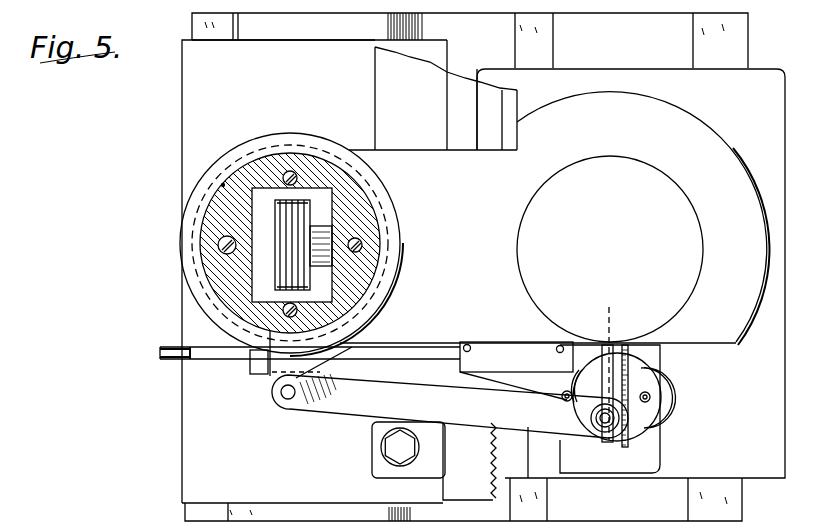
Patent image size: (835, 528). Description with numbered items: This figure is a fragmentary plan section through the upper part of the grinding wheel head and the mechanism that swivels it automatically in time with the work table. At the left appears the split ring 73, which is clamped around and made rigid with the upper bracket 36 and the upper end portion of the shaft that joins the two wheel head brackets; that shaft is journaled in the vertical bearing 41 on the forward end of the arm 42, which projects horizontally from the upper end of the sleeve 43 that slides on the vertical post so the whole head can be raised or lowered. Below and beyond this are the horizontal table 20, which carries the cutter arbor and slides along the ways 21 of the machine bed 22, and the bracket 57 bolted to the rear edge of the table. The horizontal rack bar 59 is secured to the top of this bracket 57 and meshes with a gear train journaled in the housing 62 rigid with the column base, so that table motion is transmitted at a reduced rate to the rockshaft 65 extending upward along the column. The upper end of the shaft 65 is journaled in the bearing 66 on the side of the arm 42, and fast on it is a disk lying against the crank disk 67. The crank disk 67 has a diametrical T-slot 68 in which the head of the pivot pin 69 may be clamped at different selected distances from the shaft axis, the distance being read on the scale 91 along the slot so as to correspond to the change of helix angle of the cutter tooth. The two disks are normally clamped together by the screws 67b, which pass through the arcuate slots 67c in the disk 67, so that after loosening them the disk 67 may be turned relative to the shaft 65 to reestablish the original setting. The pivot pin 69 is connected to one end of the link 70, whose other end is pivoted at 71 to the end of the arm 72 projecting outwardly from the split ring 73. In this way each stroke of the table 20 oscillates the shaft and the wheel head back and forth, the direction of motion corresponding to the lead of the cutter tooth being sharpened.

The horizontal table 20 is at (185, 440).
The ways 21 is at (390, 33).
The machine bed 22 is at (284, 512).
The upper bracket 36 is at (371, 222).
The vertical bearing 41 is at (223, 184).
The arm 42 is at (423, 162).
The sleeve 43 is at (605, 168).
The bracket 57 is at (375, 461).
The horizontal rack bar 59 is at (503, 446).
The housing 62 is at (660, 360).
The shaft 65 is at (624, 369).
The bearing 66 is at (542, 385).
The crank disk 67 is at (640, 430).
The screws 67b is at (651, 397).
The arcuate slots 67c is at (578, 348).
The T-slot 68 is at (597, 345).
The pivot pin 69 is at (618, 437).
The link 70 is at (467, 413).
The pivot 71 is at (288, 402).
The arm 72 is at (274, 380).
The split ring 73 is at (185, 250).
The scale 91 is at (642, 442).